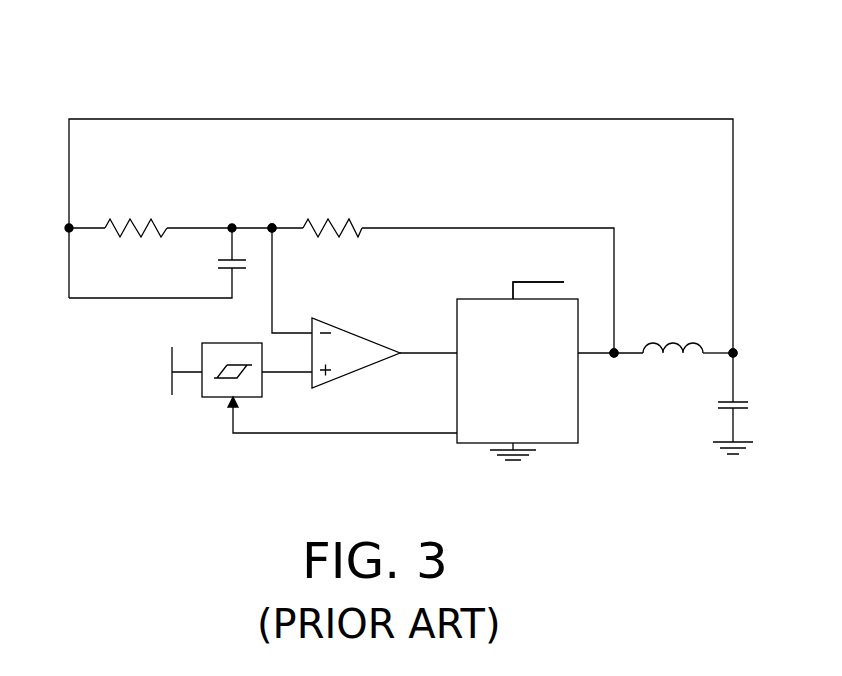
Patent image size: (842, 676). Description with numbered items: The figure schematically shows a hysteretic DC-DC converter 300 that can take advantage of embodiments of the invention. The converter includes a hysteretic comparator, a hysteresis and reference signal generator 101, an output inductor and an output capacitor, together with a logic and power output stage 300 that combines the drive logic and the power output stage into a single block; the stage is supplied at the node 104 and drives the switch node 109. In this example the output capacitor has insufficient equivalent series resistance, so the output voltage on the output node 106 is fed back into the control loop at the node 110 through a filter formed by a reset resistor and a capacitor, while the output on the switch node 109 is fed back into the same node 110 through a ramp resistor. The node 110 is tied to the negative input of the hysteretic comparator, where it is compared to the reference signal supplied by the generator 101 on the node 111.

The hysteretic DC-DC converter 300 is at (409, 247).
The hysteresis and reference signal generator 101 is at (243, 343).
The node 104 is at (513, 292).
The output node 106 is at (731, 348).
The switch node 109 is at (614, 357).
The node 110 is at (275, 224).
The node 111 is at (277, 372).